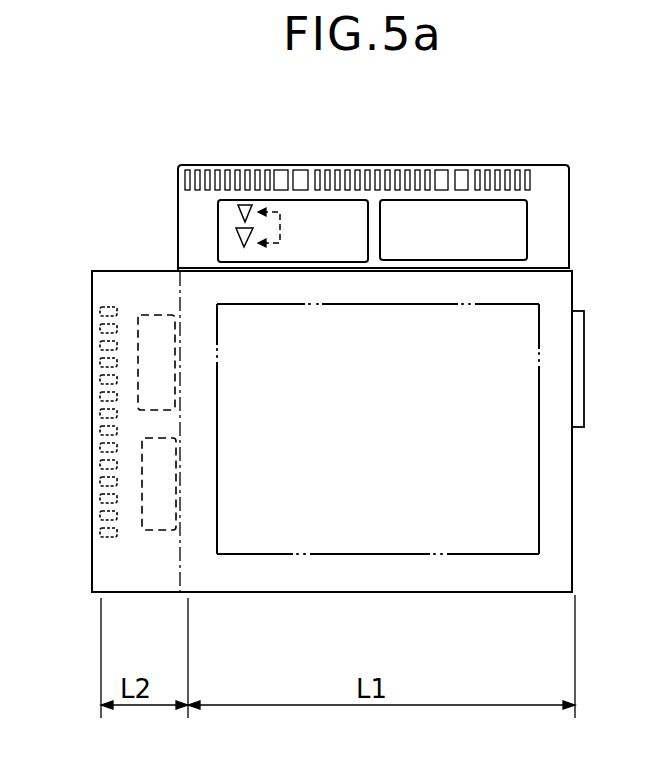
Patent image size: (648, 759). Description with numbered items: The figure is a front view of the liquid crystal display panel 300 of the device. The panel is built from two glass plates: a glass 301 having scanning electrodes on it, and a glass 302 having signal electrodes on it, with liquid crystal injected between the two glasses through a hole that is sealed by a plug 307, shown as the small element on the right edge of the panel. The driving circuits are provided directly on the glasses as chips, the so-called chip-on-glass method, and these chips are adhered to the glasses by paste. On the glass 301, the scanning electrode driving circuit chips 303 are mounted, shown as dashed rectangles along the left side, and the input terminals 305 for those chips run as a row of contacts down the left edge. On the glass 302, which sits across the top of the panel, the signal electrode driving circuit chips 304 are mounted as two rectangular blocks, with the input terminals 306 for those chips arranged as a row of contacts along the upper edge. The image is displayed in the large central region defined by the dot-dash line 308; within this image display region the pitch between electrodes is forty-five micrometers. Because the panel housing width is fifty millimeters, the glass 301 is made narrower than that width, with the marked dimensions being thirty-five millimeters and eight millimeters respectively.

The liquid crystal display panel 300 is at (336, 377).
The glass having scanning electrodes 301 is at (118, 272).
The glass having signal electrodes 302 is at (572, 200).
The scanning electrode driving circuit chips 303 is at (158, 340).
The signal electrode driving circuit chips 304 is at (230, 223).
The input terminals for scanning electrode driving circuit chips 305 is at (87, 307).
The input terminals for signal electrode driving circuit chips 306 is at (530, 152).
The plug 307 is at (580, 413).
The dot-dash line (image display region) 308 is at (397, 555).